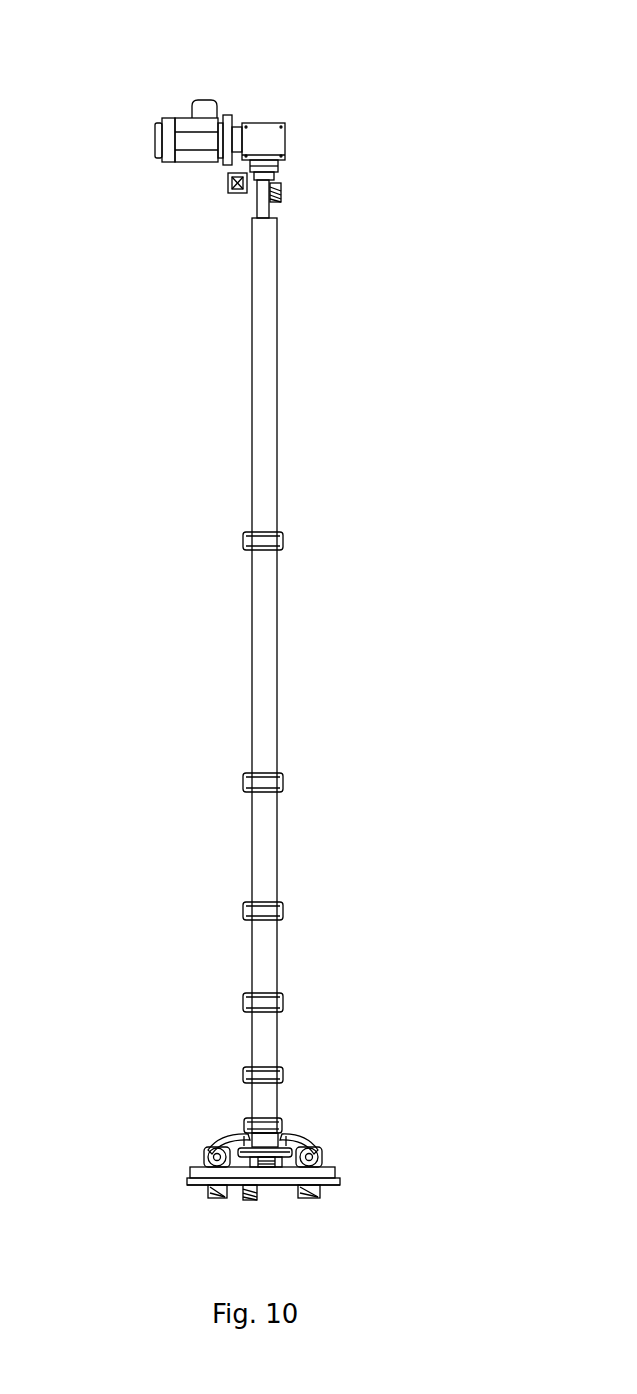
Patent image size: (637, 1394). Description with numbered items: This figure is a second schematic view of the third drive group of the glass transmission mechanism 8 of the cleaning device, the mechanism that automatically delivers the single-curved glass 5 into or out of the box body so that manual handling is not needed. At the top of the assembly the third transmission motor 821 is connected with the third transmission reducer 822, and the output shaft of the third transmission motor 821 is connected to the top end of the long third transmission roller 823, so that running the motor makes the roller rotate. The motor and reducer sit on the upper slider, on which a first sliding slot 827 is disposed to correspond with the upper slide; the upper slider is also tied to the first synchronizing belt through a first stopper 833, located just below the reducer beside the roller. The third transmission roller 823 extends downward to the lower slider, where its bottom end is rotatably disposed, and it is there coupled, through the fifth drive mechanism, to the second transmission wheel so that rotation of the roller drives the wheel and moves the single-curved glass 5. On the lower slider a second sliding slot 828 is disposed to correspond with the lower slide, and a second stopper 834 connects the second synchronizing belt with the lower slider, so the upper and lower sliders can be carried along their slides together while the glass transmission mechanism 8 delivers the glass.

The third transmission motor 821 is at (192, 142).
The third transmission reducer 822 is at (265, 142).
The first sliding slot 827 is at (228, 185).
The first stopper 833 is at (281, 193).
The third transmission roller 823 is at (263, 480).
The single-curved glass 5 is at (242, 1135).
The glass transmission mechanism 8 is at (290, 1142).
The second stopper 834 is at (242, 1188).
The second sliding slot 828 is at (318, 1193).